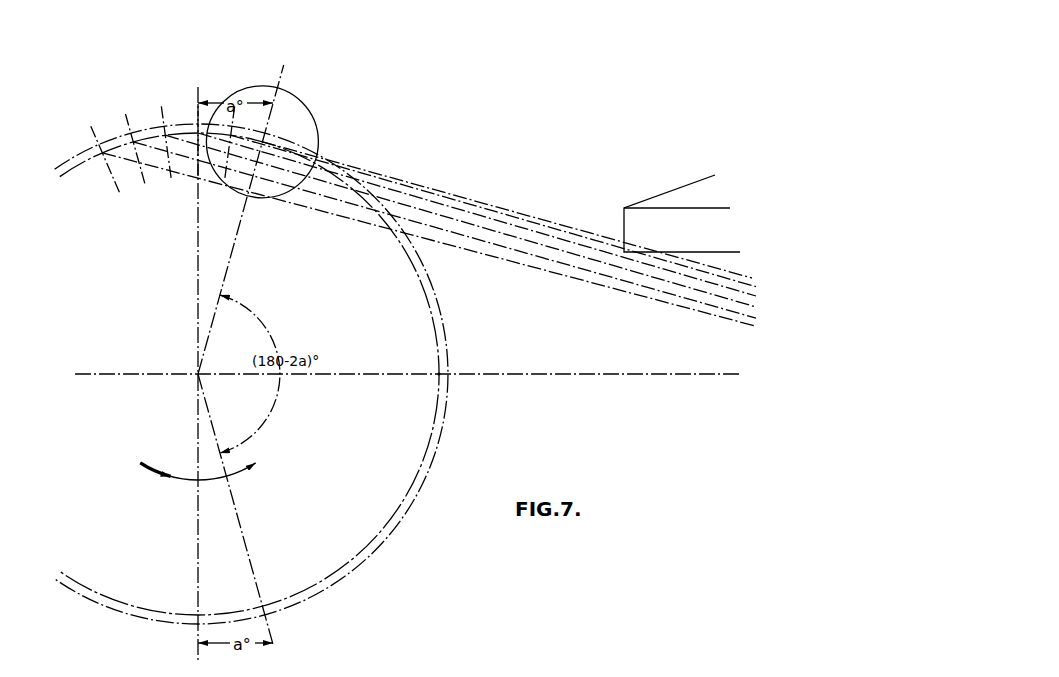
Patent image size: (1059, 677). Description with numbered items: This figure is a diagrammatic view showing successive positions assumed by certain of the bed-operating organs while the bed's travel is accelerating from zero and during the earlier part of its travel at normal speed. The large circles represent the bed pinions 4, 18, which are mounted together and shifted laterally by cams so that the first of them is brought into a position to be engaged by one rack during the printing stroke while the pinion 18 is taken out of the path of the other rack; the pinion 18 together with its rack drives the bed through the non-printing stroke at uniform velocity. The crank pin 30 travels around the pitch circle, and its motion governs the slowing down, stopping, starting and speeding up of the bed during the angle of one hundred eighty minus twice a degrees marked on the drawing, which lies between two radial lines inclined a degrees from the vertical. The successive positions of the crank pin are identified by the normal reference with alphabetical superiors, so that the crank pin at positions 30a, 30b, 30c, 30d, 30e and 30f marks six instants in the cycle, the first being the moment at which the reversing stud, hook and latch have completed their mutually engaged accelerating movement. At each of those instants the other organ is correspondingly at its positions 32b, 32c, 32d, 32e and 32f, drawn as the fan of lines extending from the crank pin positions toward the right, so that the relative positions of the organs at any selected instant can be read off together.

The bed pinion 4 is at (281, 374).
The bed pinion 18 is at (449, 408).
The crank pin 30 is at (440, 374).
The crank pin position a 30a is at (264, 141).
The crank pin position b 30b is at (232, 134).
The crank pin position c 30c is at (200, 132).
The crank pin position d 30d is at (166, 134).
The crank pin position e 30e is at (134, 140).
The crank pin position f 30f is at (102, 152).
The organ 32 position b 32b is at (750, 285).
The organ 32 position c 32c is at (708, 282).
The organ 32 position d 32d is at (670, 282).
The organ 32 position e 32e is at (632, 283).
The organ 32 position f 32f is at (593, 283).